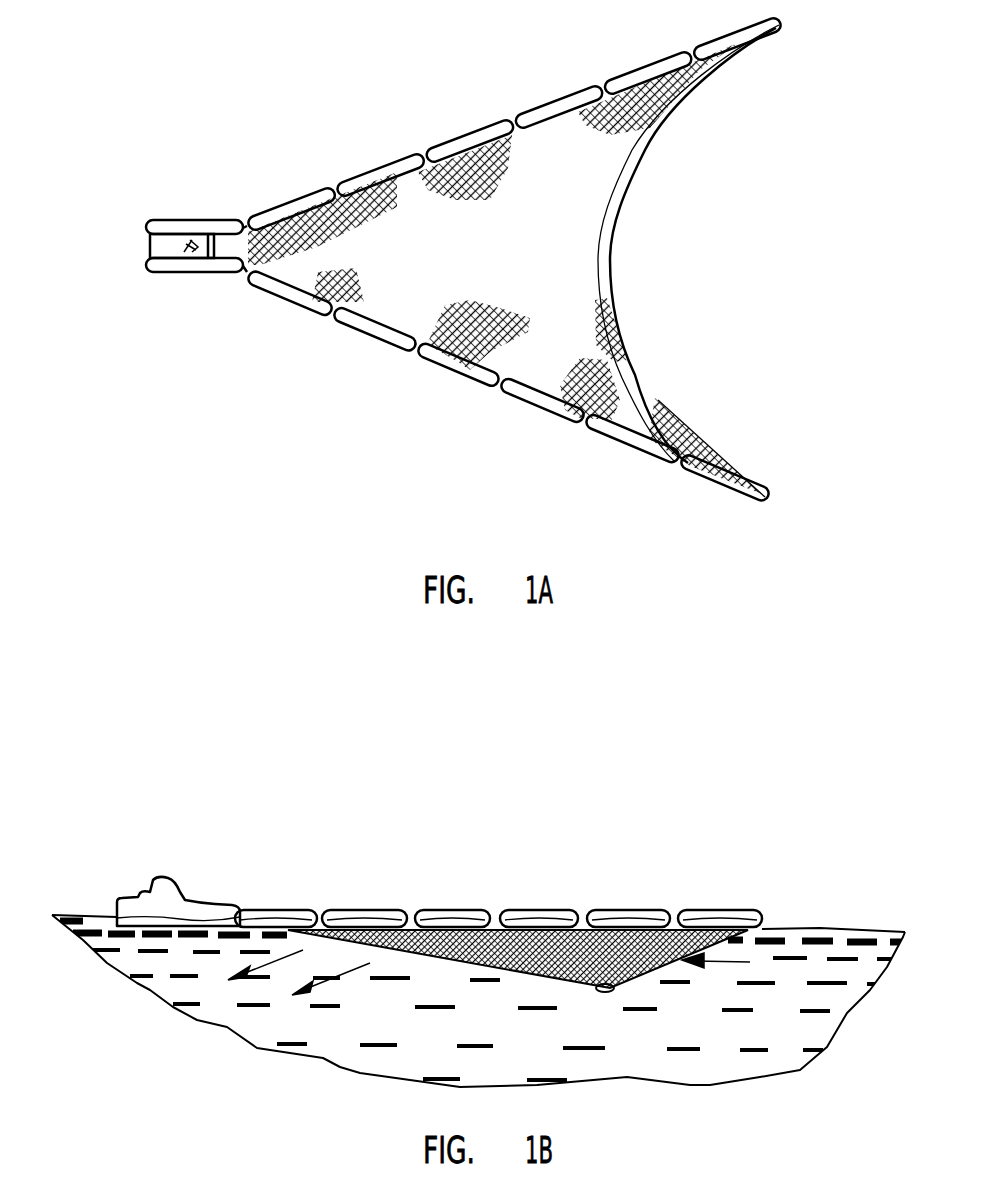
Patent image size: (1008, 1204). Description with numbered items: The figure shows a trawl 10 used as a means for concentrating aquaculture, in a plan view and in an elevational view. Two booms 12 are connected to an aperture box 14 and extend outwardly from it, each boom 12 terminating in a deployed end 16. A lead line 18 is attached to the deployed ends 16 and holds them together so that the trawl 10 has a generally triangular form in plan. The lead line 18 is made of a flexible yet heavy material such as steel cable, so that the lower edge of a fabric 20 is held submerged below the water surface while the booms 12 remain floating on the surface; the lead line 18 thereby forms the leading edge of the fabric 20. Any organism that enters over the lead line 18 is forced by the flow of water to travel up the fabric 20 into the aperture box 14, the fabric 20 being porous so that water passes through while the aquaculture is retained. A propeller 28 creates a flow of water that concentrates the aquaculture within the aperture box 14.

In FIG. 1A, the trawl 10 is at (780, 157).
In FIG. 1B, the trawl 10 is at (732, 848).
In FIG. 1A, the boom 12 is at (460, 144).
In FIG. 1B, the boom 12 is at (533, 915).
In FIG. 1A, the aperture box 14 is at (195, 255).
In FIG. 1B, the aperture box 14 is at (170, 893).
In FIG. 1A, the deployed end 16 is at (780, 22).
In FIG. 1B, the deployed end 16 is at (754, 898).
In FIG. 1A, the lead line 18 is at (604, 255).
In FIG. 1A, the fabric 20 is at (420, 347).
In FIG. 1B, the fabric 20 is at (523, 972).
In FIG. 1B, the propeller 28 is at (613, 989).